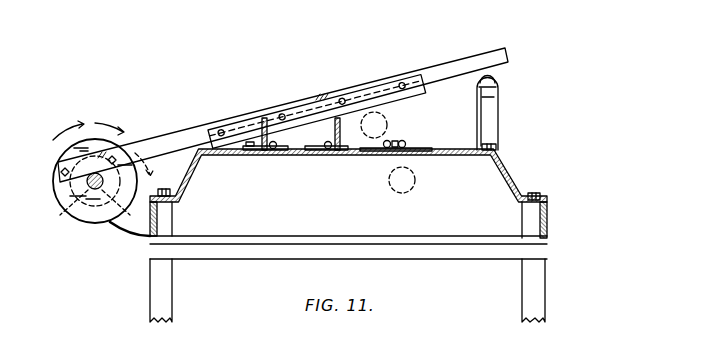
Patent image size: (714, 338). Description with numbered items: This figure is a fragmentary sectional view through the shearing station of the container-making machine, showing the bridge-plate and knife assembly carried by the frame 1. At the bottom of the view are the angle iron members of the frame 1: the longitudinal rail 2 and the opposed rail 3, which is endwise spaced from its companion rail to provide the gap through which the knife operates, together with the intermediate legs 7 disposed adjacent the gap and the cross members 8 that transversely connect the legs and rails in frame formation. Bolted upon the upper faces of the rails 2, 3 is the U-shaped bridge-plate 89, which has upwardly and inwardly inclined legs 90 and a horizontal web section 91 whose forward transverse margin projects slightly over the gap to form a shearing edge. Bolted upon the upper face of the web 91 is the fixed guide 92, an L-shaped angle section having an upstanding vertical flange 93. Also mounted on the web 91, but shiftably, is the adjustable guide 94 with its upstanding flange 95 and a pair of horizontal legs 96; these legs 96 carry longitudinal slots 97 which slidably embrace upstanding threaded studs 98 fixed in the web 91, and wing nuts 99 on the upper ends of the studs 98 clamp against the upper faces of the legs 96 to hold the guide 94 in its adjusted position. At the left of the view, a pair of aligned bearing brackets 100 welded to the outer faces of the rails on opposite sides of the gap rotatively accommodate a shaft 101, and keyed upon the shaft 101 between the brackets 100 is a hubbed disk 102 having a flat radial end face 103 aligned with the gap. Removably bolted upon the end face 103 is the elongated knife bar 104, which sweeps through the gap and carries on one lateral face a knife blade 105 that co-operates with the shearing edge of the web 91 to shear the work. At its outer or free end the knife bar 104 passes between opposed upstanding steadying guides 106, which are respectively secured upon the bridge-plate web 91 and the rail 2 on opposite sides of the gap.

The frame 1 is at (305, 157).
The longitudinal rail 2 is at (548, 220).
The rail 3 is at (155, 219).
The intermediate legs 7 is at (167, 296).
The cross members 8 is at (413, 255).
The U-shaped bridge-plate 89 is at (547, 196).
The inclined legs 90 is at (188, 174).
The web section 91 is at (230, 157).
The fixed guide 92 is at (257, 157).
The vertical flange 93 is at (265, 120).
The adjustable guide 94 is at (337, 157).
The upstanding flange 95 is at (340, 120).
The horizontal legs 96 is at (433, 157).
The longitudinal slots 97 is at (371, 148).
The threaded studs 98 is at (393, 157).
The wing nuts 99 is at (402, 143).
The bearing brackets 100 is at (128, 218).
The shaft 101 is at (93, 185).
The hubbed disk 102 is at (56, 158).
The flat radial end face 103 is at (57, 188).
The knife bar 104 is at (498, 48).
The knife blade 105 is at (393, 82).
The steadying guides 106 is at (490, 105).